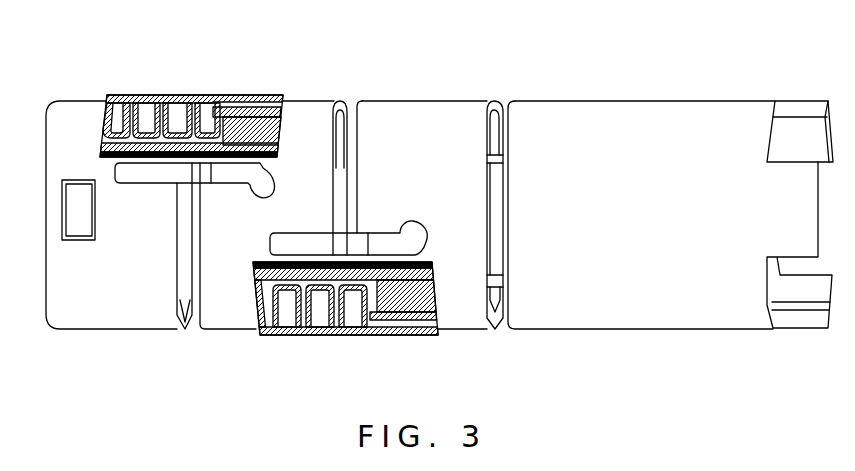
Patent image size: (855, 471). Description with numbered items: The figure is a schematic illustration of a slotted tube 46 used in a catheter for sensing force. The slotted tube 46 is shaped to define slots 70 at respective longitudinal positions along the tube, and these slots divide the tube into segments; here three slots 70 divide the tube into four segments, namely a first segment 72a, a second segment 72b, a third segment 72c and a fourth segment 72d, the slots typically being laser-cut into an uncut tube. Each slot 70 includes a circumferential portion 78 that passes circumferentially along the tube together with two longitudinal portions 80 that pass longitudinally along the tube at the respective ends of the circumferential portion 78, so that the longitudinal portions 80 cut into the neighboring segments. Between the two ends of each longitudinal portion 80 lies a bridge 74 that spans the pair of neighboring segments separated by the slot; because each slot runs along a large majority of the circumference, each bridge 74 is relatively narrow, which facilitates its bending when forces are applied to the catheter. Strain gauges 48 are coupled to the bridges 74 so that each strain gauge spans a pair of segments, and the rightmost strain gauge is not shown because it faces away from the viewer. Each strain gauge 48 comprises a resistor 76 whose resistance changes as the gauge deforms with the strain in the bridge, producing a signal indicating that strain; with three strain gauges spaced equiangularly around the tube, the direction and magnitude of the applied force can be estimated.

The slotted tube 46 is at (693, 113).
The strain gauge 48 is at (177, 98).
The slot 70 is at (350, 112).
The first segment 72a is at (102, 318).
The second segment 72b is at (241, 315).
The third segment 72c is at (462, 329).
The fourth segment 72d is at (665, 328).
The bridge 74 is at (503, 150).
The resistor 76 is at (276, 136).
The circumferential portion 78 is at (182, 302).
The longitudinal portion 80 is at (132, 177).